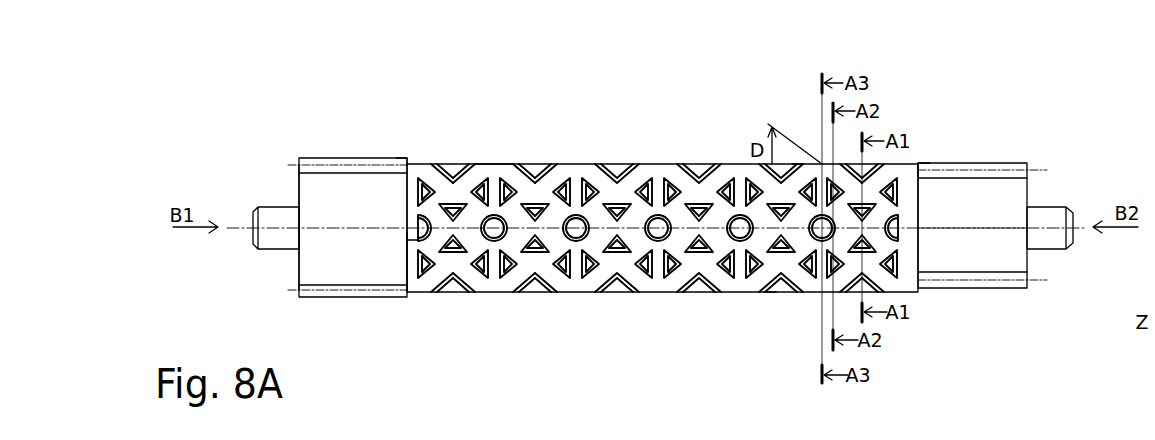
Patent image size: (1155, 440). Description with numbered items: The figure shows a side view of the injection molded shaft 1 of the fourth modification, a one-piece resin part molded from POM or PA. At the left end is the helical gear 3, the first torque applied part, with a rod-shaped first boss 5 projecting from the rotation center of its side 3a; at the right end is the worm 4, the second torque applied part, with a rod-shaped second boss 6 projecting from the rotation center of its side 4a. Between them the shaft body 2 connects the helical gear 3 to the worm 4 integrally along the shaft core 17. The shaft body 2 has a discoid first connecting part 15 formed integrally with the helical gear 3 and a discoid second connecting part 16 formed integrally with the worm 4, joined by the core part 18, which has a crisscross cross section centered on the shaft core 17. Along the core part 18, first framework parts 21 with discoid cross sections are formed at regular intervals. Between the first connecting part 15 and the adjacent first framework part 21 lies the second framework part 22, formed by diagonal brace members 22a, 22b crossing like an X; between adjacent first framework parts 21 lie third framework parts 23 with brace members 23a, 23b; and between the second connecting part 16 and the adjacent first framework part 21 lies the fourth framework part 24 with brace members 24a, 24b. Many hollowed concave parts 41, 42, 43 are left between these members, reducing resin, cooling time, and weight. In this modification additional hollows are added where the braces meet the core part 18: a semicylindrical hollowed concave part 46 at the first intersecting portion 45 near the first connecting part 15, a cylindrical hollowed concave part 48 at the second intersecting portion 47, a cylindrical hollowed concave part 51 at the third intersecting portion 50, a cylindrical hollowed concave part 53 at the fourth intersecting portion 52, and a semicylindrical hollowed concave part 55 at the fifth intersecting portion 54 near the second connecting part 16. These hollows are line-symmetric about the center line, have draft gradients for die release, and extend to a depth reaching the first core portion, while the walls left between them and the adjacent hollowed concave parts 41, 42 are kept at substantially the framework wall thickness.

The injection molded shaft 1 is at (1026, 149).
The shaft body 2 is at (693, 160).
The helical gear 3 is at (315, 167).
The side of the helical gear 3a is at (298, 267).
The worm 4 is at (987, 165).
The side of the worm 4a is at (1048, 172).
The first boss 5 is at (272, 213).
The second boss 6 is at (1055, 213).
The first connecting part 15 is at (406, 158).
The second connecting part 16 is at (915, 164).
The shaft core (center axis) 17 is at (999, 228).
The core part 18 is at (418, 247).
The first framework part 21 is at (487, 164).
The second framework part 22 is at (440, 217).
The diagonal brace member 22a is at (433, 164).
The diagonal brace member 22b is at (467, 164).
The third framework part 23 is at (552, 221).
The diagonal brace member 23a is at (528, 164).
The diagonal brace member 23b is at (552, 164).
The fourth framework part 24 is at (922, 208).
The diagonal brace member 24a is at (843, 164).
The diagonal brace member 24b is at (915, 163).
The hollowed concave part 41 is at (427, 203).
The hollowed concave part 42 is at (427, 256).
The hollowed concave part 43 is at (452, 164).
The first intersecting portion 45 is at (415, 240).
The semicylindrical hollowed concave part 46 is at (420, 225).
The second intersecting portion 47 is at (517, 164).
The cylindrical hollowed concave part 48 is at (492, 292).
The third intersecting portion 50 is at (655, 214).
The cylindrical hollowed concave part 51 is at (576, 292).
The fourth intersecting portion 52 is at (798, 164).
The cylindrical hollowed concave part 53 is at (770, 292).
The fifth intersecting portion 54 is at (900, 246).
The semicylindrical hollowed concave part 55 is at (900, 228).